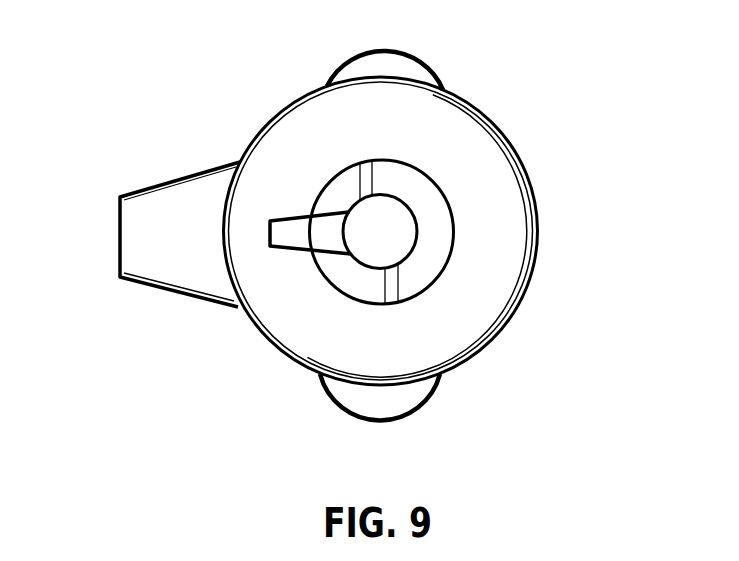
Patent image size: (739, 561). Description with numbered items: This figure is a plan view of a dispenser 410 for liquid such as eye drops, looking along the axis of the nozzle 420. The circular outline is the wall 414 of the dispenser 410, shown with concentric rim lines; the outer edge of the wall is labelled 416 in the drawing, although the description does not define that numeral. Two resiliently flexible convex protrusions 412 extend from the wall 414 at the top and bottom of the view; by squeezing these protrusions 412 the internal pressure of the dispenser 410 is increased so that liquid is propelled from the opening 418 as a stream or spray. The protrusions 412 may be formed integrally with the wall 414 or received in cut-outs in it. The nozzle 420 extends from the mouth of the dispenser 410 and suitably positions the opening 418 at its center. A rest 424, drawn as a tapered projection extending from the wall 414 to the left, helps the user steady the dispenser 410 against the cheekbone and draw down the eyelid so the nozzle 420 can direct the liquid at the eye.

The dispenser 410 is at (518, 86).
The resiliently flexible convex protrusions 412 is at (418, 57).
The wall 414 is at (533, 182).
The inner rim edge 416 is at (533, 273).
The opening 418 is at (248, 235).
The nozzle 420 is at (287, 216).
The rest 424 is at (121, 278).